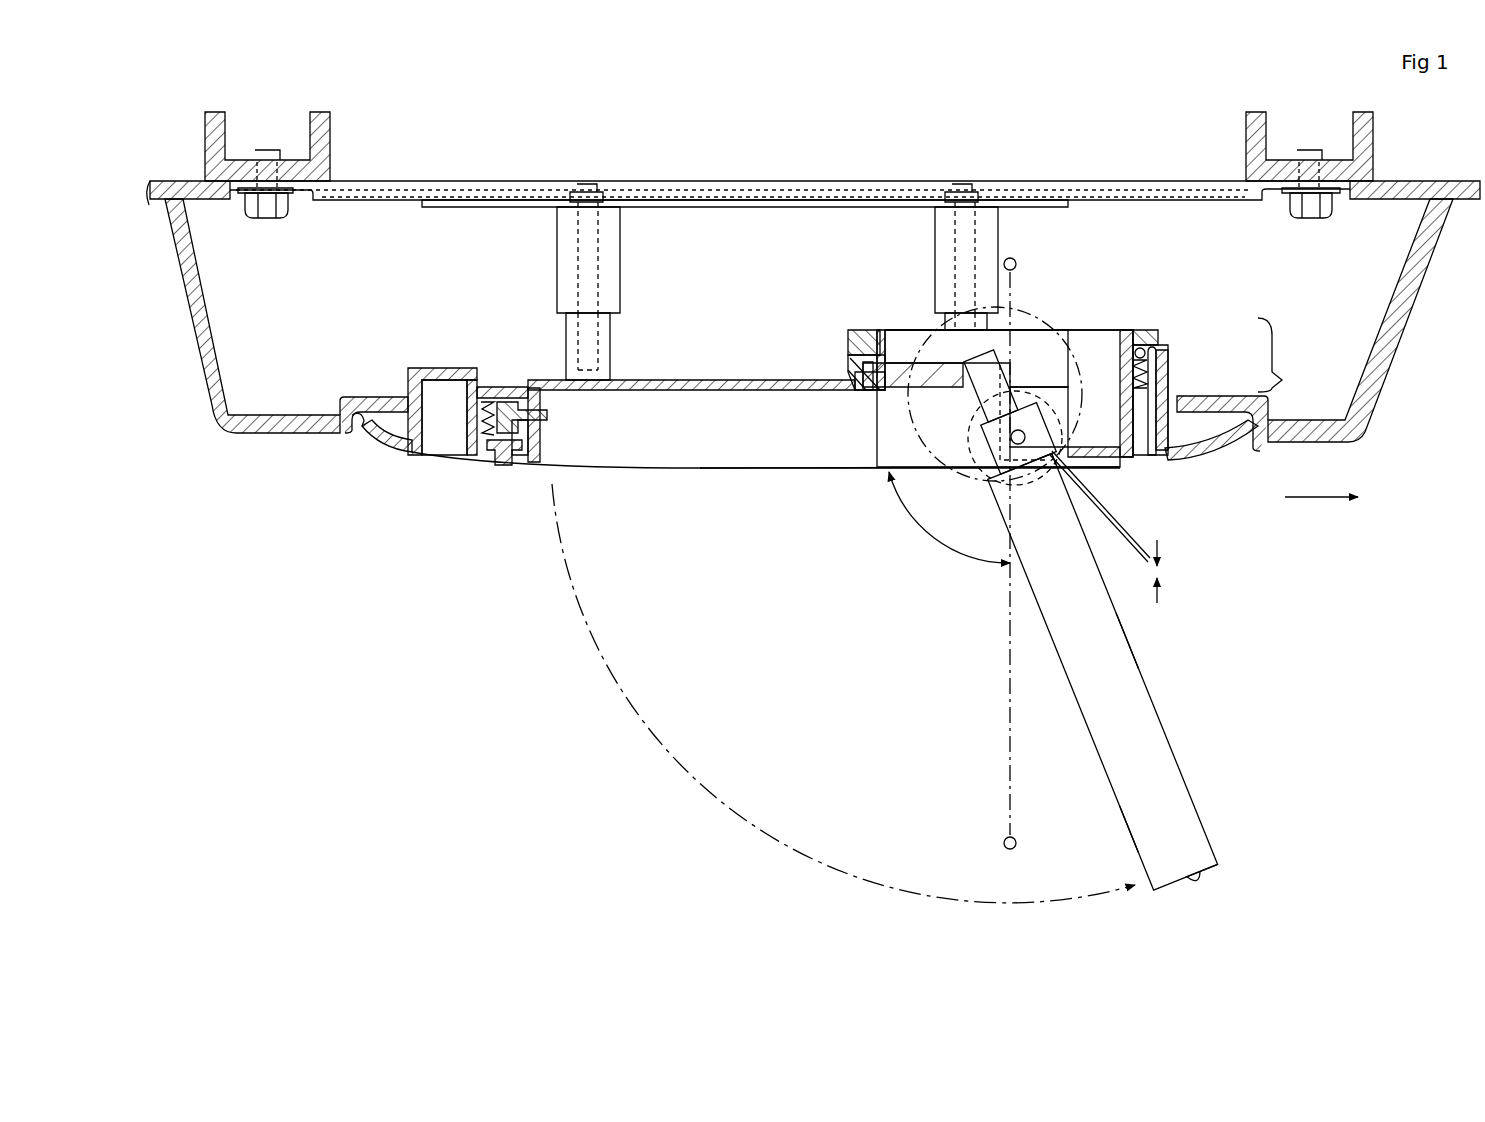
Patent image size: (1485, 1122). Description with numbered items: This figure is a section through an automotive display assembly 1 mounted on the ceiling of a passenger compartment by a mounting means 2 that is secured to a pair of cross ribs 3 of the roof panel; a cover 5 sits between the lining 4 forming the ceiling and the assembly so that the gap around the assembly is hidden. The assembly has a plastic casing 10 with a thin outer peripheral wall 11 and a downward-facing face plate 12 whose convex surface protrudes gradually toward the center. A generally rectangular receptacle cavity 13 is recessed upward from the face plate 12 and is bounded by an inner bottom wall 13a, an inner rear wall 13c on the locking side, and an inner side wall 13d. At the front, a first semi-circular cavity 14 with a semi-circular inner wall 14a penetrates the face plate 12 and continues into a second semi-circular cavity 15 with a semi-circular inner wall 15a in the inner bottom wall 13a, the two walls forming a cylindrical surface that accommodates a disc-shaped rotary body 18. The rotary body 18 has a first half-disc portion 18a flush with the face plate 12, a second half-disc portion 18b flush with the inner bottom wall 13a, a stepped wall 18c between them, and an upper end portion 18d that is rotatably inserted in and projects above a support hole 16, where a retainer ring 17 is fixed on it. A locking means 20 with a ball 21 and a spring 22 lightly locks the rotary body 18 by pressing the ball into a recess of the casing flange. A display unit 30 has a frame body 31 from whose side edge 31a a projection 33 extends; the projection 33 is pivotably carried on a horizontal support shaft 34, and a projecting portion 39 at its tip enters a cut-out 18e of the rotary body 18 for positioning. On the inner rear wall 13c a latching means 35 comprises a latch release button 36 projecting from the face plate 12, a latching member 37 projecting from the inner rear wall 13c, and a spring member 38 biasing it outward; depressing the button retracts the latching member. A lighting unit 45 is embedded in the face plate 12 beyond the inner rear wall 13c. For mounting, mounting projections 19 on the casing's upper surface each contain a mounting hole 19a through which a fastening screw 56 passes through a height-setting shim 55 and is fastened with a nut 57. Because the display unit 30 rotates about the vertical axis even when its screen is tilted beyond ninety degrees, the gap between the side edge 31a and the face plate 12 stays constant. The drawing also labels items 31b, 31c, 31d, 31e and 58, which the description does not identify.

The automotive display assembly 1 is at (1278, 355).
The mounting means 2 is at (1203, 212).
The cross ribs 3 is at (331, 134).
The lining 4 is at (1434, 178).
The cover 5 is at (1396, 340).
The casing 10 is at (398, 458).
The outer peripheral wall 11 is at (326, 420).
The face plate 12 is at (370, 434).
The receptacle cavity 13 is at (647, 470).
The inner bottom wall 13a is at (728, 392).
The inner rear wall 13c is at (542, 440).
The inner side wall 13d is at (777, 470).
The first semi-circular cavity 14 is at (1160, 460).
The semi-circular inner wall 14a is at (1170, 384).
The second semi-circular cavity 15 is at (862, 392).
The semi-circular inner wall 15a is at (848, 372).
The support hole 16 is at (880, 400).
The retainer ring 17 is at (845, 335).
The rotary body 18 is at (1124, 458).
The first half-disc portion 18a is at (1148, 464).
The second half-disc portion 18b is at (908, 388).
The wall 18c is at (1068, 425).
The upper end portion 18d is at (1125, 333).
The cut-out 18e is at (1029, 370).
The mounting projection 19 is at (612, 327).
The mounting hole 19a is at (604, 345).
The locking means 20 is at (1180, 349).
The ball 21 is at (1162, 340).
The spring 22 is at (1150, 372).
The display unit 30 is at (1107, 654).
The frame body 31 is at (1188, 823).
The side edge 31a is at (1048, 462).
The arm lower end 31b is at (1208, 872).
The arm tip 31c is at (1180, 896).
The arm side 31d is at (1158, 670).
The arm face 31e is at (1123, 828).
The projection 33 is at (1000, 470).
The support shaft 34 is at (1018, 445).
The latching means 35 is at (490, 470).
The latch release button 36 is at (503, 467).
The latching member 37 is at (549, 414).
The spring member 38 is at (486, 400).
The projecting portion 39 is at (977, 415).
The lighting unit 45 is at (440, 445).
The shim 55 is at (612, 222).
The fastening screw 56 is at (600, 258).
The nut 57 is at (591, 180).
The nut 58 is at (266, 222).